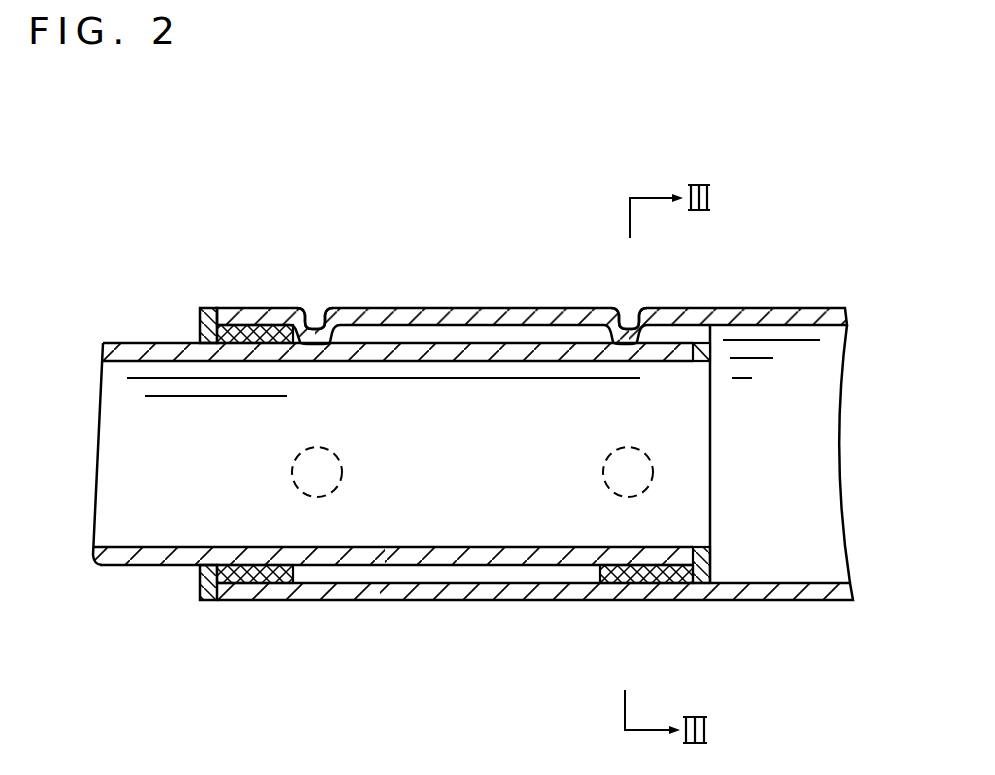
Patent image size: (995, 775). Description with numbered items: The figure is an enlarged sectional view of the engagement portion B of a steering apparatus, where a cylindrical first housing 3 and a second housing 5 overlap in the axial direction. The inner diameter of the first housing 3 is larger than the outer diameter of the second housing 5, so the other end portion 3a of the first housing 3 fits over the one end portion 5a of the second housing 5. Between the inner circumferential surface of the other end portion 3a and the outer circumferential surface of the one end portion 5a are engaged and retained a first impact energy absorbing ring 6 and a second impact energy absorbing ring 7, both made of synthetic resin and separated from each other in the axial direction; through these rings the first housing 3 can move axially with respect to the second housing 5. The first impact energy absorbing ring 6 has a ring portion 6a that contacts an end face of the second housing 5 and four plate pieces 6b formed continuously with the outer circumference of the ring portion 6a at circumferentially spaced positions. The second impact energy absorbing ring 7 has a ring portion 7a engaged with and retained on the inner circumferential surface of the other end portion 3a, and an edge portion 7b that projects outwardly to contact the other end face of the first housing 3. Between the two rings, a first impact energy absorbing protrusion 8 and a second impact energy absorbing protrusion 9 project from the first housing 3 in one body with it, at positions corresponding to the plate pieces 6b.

The first housing 3 is at (822, 609).
The other end portion of the first housing 3a is at (500, 582).
The second housing 5 is at (114, 569).
The one end portion of the second housing 5a is at (433, 567).
The first impact energy absorbing ring 6 is at (722, 561).
The ring portion 6a is at (717, 327).
The plate pieces 6b is at (673, 578).
The second impact energy absorbing ring 7 is at (216, 497).
The ring portion 7a is at (278, 580).
The edge portion 7b is at (210, 603).
The first impact energy absorbing protrusion 8 is at (632, 333).
The second impact energy absorbing protrusion 9 is at (317, 325).
The engagement portion B is at (498, 272).